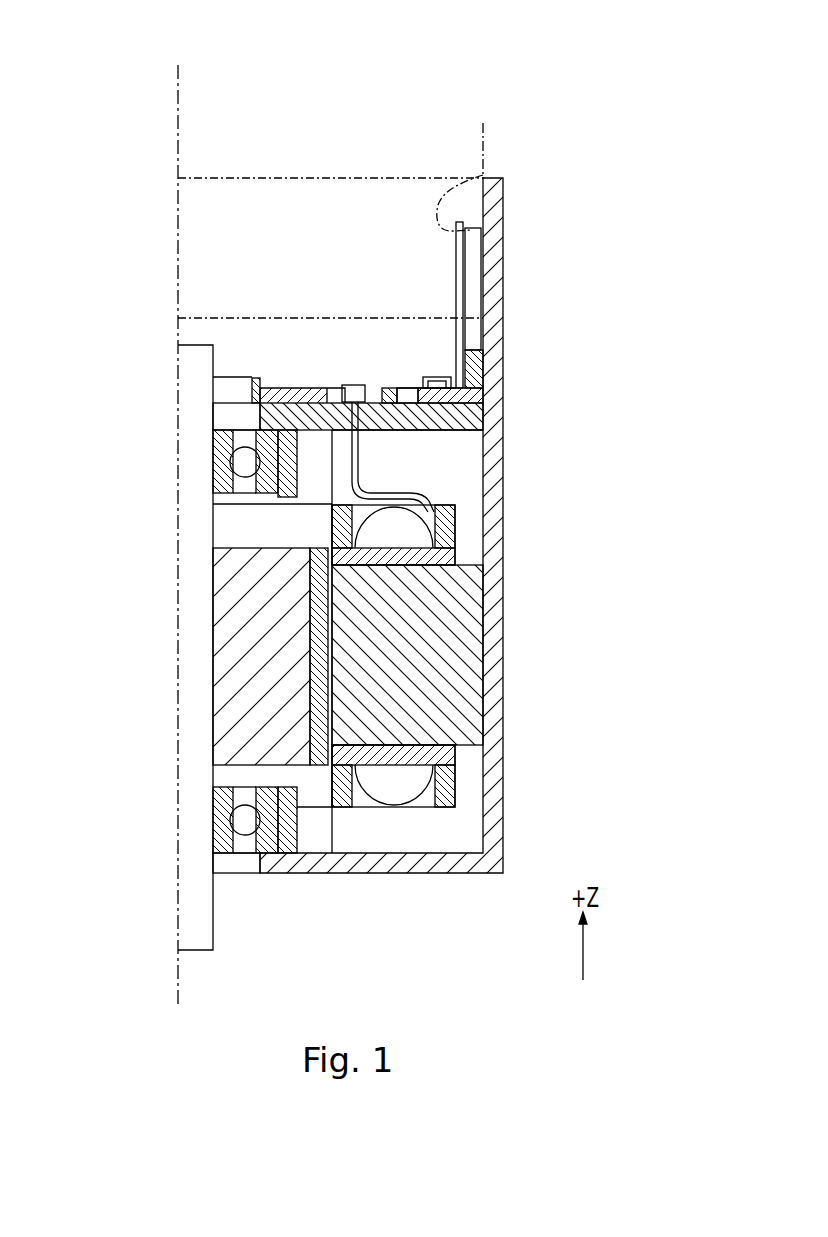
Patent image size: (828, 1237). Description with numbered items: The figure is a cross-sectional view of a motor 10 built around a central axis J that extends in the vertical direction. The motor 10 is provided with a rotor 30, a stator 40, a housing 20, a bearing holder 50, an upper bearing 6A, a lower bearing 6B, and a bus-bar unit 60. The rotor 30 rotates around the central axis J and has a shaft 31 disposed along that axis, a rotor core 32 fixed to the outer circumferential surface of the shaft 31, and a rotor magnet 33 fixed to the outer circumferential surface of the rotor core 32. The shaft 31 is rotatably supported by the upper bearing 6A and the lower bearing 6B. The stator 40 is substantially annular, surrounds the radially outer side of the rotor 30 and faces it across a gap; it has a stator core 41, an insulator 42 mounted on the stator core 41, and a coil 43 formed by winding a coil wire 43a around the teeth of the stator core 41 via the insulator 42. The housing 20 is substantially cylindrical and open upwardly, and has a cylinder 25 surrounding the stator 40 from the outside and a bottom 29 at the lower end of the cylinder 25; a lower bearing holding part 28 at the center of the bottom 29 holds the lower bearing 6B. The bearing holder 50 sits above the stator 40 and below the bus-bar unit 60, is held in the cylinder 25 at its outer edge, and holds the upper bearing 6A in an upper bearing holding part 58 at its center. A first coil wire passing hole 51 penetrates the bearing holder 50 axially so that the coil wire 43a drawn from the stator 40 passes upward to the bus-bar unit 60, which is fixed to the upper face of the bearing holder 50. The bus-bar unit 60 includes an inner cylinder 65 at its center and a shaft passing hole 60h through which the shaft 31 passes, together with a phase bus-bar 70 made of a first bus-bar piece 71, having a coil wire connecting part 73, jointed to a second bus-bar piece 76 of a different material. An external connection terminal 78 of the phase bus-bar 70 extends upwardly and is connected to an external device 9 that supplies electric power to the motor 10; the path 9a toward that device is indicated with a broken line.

The motor 10 is at (521, 68).
The central axis J is at (180, 98).
The external device 9 is at (483, 145).
The lead wire path 9a is at (486, 174).
The housing 20 is at (508, 196).
The cylinder 25 is at (492, 785).
The bottom 29 is at (410, 872).
The shaft 31 is at (195, 543).
The phase bus-bar 70 is at (476, 251).
The external connection terminal 78 is at (470, 278).
The bus-bar unit 60 is at (483, 341).
The second bus-bar piece 76 is at (422, 362).
The first bus-bar piece 71 is at (376, 382).
The coil wire connecting part 73 is at (343, 390).
The bearing holder 50 is at (493, 402).
The first coil wire passing hole 51 is at (440, 431).
The upper bearing holding part 58 is at (262, 425).
The shaft passing hole 60h is at (250, 395).
The inner cylinder 65 is at (258, 390).
The upper bearing 6A is at (243, 462).
The lower bearing 6B is at (243, 822).
The lower bearing holding part 28 is at (297, 870).
The rotor 30 is at (341, 656).
The rotor core 32 is at (238, 627).
The rotor magnet 33 is at (305, 658).
The stator 40 is at (468, 649).
The stator core 41 is at (470, 652).
The insulator 42 is at (459, 649).
The coil 43 is at (407, 538).
The coil wire 43a is at (360, 462).